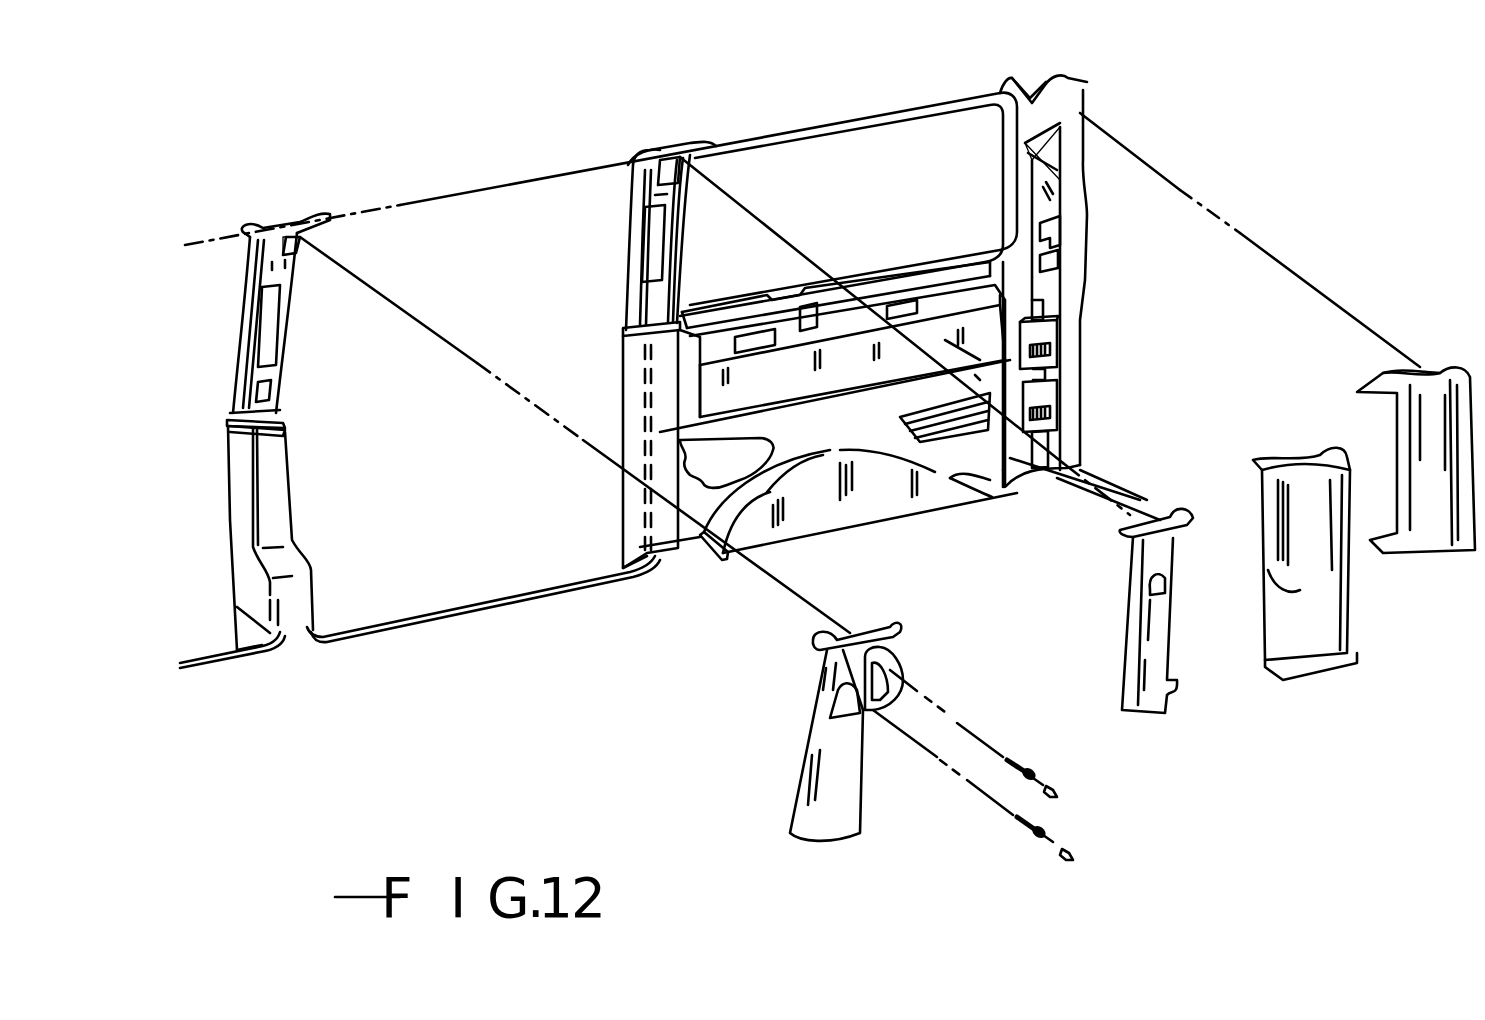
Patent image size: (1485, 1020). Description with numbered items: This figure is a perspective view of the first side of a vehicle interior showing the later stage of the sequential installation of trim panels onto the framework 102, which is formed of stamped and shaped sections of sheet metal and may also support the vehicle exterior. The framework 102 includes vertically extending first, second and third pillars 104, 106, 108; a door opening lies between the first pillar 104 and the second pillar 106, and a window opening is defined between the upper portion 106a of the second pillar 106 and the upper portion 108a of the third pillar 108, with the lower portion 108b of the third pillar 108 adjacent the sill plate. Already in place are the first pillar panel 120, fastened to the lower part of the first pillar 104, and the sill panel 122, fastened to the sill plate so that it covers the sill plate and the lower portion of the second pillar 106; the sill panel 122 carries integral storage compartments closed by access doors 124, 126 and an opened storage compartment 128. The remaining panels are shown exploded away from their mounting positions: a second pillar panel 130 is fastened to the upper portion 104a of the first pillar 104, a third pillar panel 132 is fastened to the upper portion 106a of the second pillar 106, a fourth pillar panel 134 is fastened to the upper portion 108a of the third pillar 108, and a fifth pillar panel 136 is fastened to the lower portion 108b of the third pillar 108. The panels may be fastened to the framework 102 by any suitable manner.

The framework 102 is at (752, 108).
The first pillar 104 is at (232, 368).
The upper portion of the first pillar 104a is at (250, 274).
The second pillar 106 is at (618, 316).
The upper portion of the second pillar 106a is at (628, 222).
The third pillar 108 is at (1088, 207).
The upper portion of the third pillar 108a is at (1060, 124).
The lower portion of the third pillar 108b is at (1072, 330).
The first pillar panel 120 is at (272, 470).
The sill panel 122 is at (850, 537).
The access door 124 is at (737, 325).
The access door 126 is at (887, 300).
The opened storage compartment 128 is at (727, 463).
The second pillar panel 130 is at (820, 715).
The third pillar panel 132 is at (1125, 620).
The fourth pillar panel 134 is at (1425, 435).
The fifth pillar panel 136 is at (1290, 498).